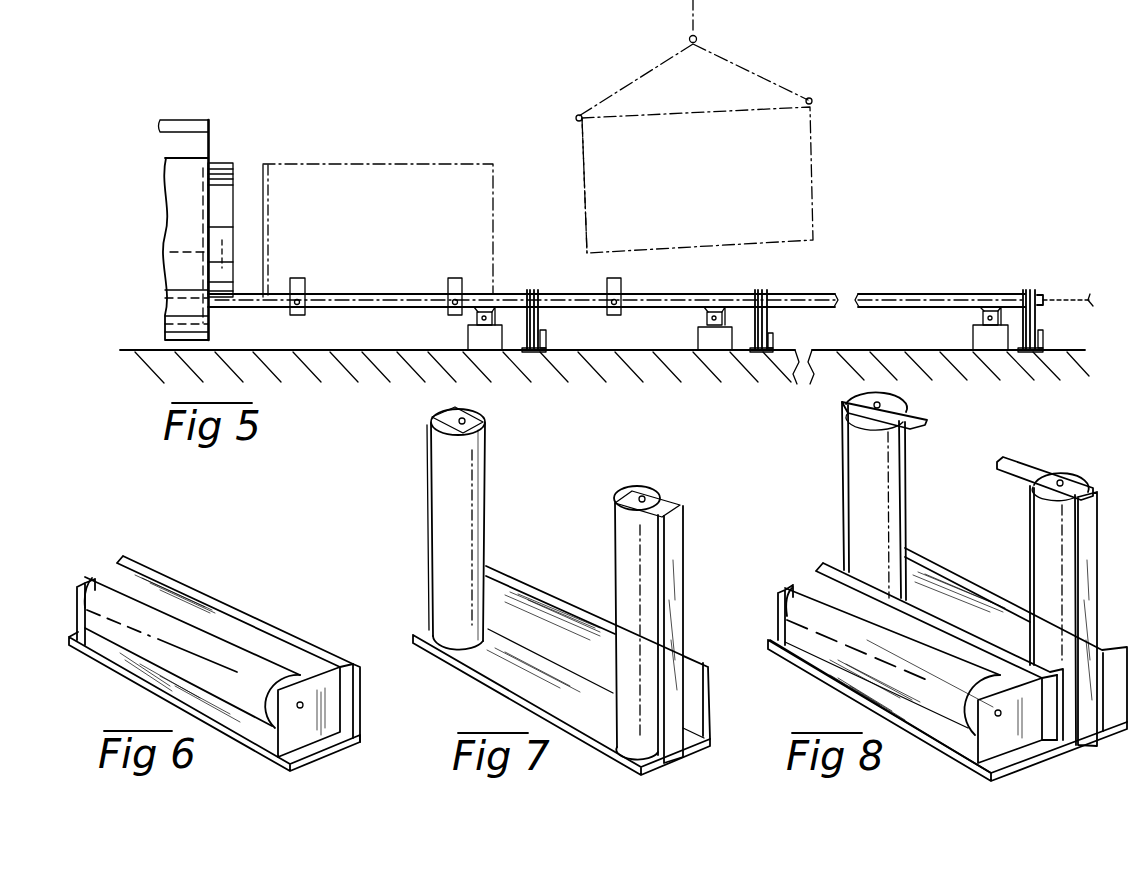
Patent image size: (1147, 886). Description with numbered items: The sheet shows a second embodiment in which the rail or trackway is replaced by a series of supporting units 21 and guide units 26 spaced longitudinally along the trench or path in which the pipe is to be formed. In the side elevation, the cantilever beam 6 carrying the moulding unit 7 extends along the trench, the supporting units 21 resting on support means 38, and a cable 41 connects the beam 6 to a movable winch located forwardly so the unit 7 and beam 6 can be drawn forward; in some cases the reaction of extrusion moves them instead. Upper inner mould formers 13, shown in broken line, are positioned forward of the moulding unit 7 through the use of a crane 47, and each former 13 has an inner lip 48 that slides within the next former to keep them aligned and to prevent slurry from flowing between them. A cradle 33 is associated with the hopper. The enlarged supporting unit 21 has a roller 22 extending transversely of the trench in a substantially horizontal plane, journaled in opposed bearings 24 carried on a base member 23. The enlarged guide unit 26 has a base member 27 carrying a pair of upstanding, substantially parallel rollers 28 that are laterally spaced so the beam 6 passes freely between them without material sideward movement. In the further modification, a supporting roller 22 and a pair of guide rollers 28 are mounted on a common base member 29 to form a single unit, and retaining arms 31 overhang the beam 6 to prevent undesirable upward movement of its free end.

In FIG. 5, the cantilever beam 6 is at (370, 292).
In FIG. 5, the moulding unit 7 is at (216, 215).
In FIG. 5, the upper inner mould formers 13 is at (222, 178).
In FIG. 5, the supporting unit 21 is at (473, 313).
In FIG. 6, the supporting unit 21 is at (234, 653).
In FIG. 8, the supporting unit 21 is at (913, 673).
In FIG. 6, the roller 22 is at (214, 633).
In FIG. 8, the roller 22 is at (818, 594).
In FIG. 6, the base member 23 is at (133, 683).
In FIG. 6, the bearings 24 is at (81, 590).
In FIG. 8, the bearings 24 is at (776, 608).
In FIG. 5, the guide unit 26 is at (540, 321).
In FIG. 7, the guide unit 26 is at (561, 591).
In FIG. 8, the guide unit 26 is at (929, 589).
In FIG. 7, the base member 27 is at (525, 683).
In FIG. 7, the rollers 28 is at (462, 477).
In FIG. 8, the rollers 28 is at (868, 483).
In FIG. 8, the common base member 29 is at (838, 667).
In FIG. 8, the arms 31 is at (918, 421).
In FIG. 5, the cradle 33 is at (210, 137).
In FIG. 5, the support means 38 is at (482, 337).
In FIG. 5, the cable 41 is at (1061, 299).
In FIG. 5, the crane 47 is at (697, 23).
In FIG. 5, the inner lip 48 is at (270, 243).